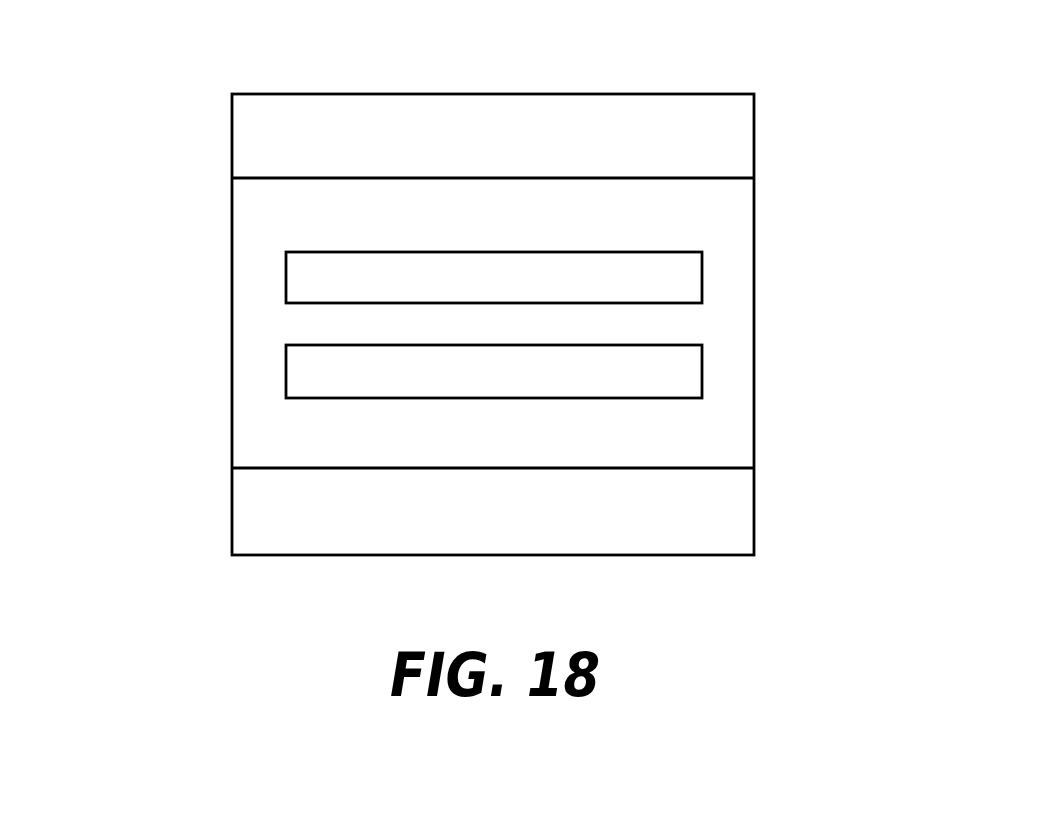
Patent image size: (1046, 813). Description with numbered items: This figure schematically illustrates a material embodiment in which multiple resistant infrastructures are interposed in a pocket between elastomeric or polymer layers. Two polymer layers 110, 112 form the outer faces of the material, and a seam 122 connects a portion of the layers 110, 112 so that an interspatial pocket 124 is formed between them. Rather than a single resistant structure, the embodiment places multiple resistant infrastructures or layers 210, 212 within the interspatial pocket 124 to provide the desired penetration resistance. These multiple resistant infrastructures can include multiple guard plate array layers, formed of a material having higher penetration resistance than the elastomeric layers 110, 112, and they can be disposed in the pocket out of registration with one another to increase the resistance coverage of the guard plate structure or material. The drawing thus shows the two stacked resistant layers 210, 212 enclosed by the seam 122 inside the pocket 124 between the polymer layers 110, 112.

The polymer layer 110 is at (389, 123).
The polymer layer 112 is at (701, 530).
The seam 122 is at (230, 342).
The interspatial pocket 124 is at (520, 450).
The resistant infrastructure layer 210 is at (667, 267).
The resistant infrastructure layer 212 is at (674, 363).